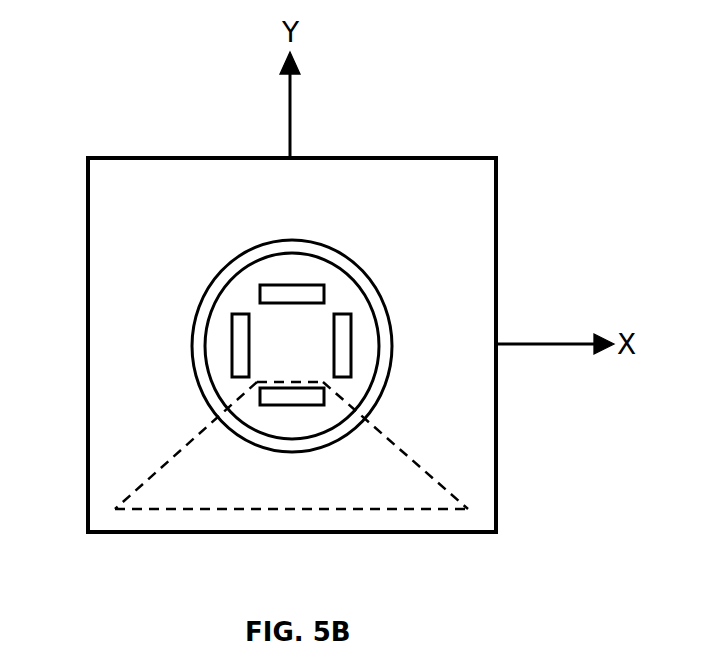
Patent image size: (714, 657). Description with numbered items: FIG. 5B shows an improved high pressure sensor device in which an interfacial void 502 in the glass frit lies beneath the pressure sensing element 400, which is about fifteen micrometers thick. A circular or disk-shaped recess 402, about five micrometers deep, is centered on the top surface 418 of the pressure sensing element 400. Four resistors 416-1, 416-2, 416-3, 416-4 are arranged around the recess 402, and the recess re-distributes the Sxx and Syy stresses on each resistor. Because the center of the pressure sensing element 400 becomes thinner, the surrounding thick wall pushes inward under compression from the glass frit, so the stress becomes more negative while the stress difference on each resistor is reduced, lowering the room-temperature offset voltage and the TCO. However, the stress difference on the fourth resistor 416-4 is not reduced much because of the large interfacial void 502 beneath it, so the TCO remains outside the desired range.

The pressure sensing element 400 is at (455, 207).
The recess 402 is at (248, 282).
The resistor 416-1 is at (351, 338).
The resistor 416-2 is at (297, 285).
The resistor 416-3 is at (232, 330).
The resistor 416-4 is at (285, 405).
The top surface 418 is at (128, 412).
The interfacial void 502 is at (408, 472).